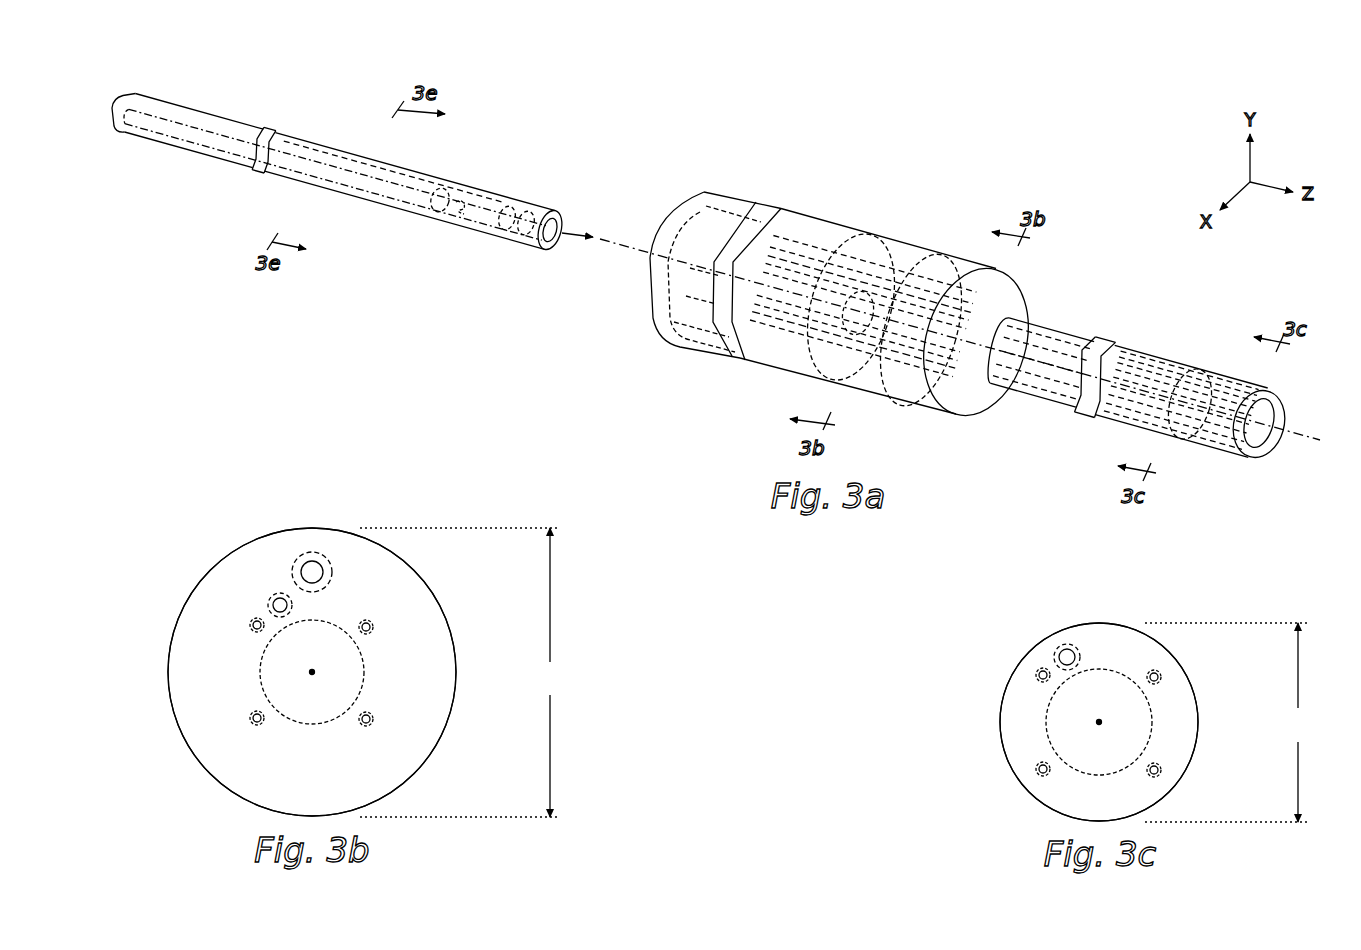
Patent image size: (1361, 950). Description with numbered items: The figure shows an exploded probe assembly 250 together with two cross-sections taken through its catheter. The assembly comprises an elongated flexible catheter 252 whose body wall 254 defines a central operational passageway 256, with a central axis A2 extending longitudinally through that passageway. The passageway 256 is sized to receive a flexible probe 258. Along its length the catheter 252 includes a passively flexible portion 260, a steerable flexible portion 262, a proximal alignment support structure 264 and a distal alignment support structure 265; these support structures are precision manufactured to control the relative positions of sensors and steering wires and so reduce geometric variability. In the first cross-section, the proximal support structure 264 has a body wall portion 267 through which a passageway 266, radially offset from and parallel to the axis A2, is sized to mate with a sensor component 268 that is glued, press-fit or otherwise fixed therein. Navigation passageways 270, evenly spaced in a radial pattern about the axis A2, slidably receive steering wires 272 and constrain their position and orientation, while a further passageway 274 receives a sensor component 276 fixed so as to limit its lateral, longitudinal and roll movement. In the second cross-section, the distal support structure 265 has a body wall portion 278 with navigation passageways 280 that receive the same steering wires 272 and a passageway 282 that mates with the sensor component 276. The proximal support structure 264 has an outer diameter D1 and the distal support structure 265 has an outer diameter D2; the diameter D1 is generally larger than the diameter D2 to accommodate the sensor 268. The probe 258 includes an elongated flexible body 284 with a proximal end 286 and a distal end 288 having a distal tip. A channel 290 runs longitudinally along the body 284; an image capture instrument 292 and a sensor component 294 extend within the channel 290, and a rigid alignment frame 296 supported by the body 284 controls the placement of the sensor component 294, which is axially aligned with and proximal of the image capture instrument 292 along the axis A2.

In FIG. 3A, the probe assembly 250 is at (902, 146).
In FIG. 3A, the elongated flexible catheter 252 is at (1090, 344).
In FIG. 3A, the body wall 254 is at (1160, 352).
In FIG. 3A, the central operational passageway 256 is at (1262, 442).
In FIG. 3B, the central operational passageway 256 is at (305, 706).
In FIG. 3C, the central operational passageway 256 is at (1062, 722).
In FIG. 3A, the flexible probe 258 is at (291, 103).
In FIG. 3A, the passively flexible portion 260 is at (712, 360).
In FIG. 3A, the steerable flexible portion 262 is at (1054, 412).
In FIG. 3A, the proximal alignment support structure 264 is at (945, 416).
In FIG. 3B, the proximal alignment support structure 264 is at (458, 668).
In FIG. 3A, the distal alignment support structure 265 is at (1226, 460).
In FIG. 3C, the distal alignment support structure 265 is at (1112, 623).
In FIG. 3B, the passageway 266 is at (340, 582).
In FIG. 3B, the body wall portion 267 is at (420, 745).
In FIG. 3A, the sensor component 268 is at (946, 282).
In FIG. 3B, the sensor component 268 is at (312, 568).
In FIG. 3B, the navigation passageways 270 is at (368, 622).
In FIG. 3A, the steering wires 272 is at (938, 248).
In FIG. 3B, the steering wires 272 is at (250, 625).
In FIG. 3C, the steering wires 272 is at (1033, 670).
In FIG. 3B, the passageway 274 is at (280, 598).
In FIG. 3A, the sensor component 276 is at (809, 218).
In FIG. 3B, the sensor component 276 is at (265, 603).
In FIG. 3C, the sensor component 276 is at (1057, 650).
In FIG. 3C, the body wall portion 278 is at (1190, 720).
In FIG. 3C, the navigation passageways 280 is at (1036, 680).
In FIG. 3C, the passageway 282 is at (1073, 648).
In FIG. 3A, the elongated flexible body 284 is at (318, 136).
In FIG. 3A, the proximal end 286 is at (125, 128).
In FIG. 3A, the distal end 288 is at (530, 250).
In FIG. 3A, the channel 290 is at (562, 220).
In FIG. 3A, the image capture instrument 292 is at (522, 198).
In FIG. 3A, the sensor component 294 is at (357, 196).
In FIG. 3A, the rigid alignment frame 296 is at (445, 192).
In FIG. 3A, the central axis A2 is at (1306, 432).
In FIG. 3B, the central axis A2 is at (312, 664).
In FIG. 3C, the central axis A2 is at (1100, 714).
In FIG. 3B, the outer diameter D1 is at (461, 672).
In FIG. 3C, the outer diameter D2 is at (1229, 722).